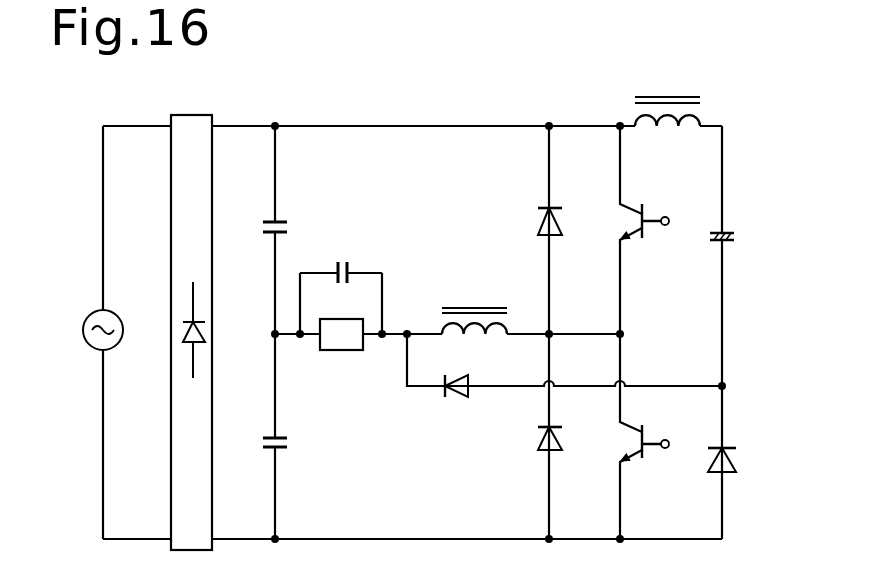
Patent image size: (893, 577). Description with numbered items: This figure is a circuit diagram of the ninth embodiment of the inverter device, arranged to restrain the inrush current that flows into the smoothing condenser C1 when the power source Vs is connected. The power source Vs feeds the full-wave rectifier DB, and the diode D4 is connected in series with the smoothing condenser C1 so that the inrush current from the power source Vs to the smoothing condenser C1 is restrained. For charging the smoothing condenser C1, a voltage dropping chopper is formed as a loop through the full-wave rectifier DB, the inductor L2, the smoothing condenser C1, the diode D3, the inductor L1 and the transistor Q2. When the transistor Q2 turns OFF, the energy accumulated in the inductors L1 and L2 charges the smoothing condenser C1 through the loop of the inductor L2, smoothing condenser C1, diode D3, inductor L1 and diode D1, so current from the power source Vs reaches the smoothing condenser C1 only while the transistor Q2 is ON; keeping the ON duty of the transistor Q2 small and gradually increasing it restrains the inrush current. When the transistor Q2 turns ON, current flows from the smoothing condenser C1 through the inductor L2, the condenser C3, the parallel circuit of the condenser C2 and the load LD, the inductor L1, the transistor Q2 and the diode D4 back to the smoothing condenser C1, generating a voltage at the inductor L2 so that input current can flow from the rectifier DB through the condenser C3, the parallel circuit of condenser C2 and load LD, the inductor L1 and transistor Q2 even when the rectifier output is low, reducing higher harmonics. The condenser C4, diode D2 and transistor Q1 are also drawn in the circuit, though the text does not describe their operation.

The power source Vs is at (89, 344).
The full-wave rectifier DB is at (191, 316).
The condenser C3 is at (296, 224).
The capacitor C4 is at (296, 449).
The condenser C2 is at (358, 259).
The load LD is at (341, 335).
The inductor L1 is at (474, 305).
The diode D3 is at (455, 402).
The diode D1 is at (530, 217).
The diode D2 is at (529, 452).
The transistor Q1 is at (646, 241).
The transistor Q2 is at (645, 464).
The inductor L2 is at (667, 131).
The smoothing condenser C1 is at (741, 251).
The diode D4 is at (744, 472).